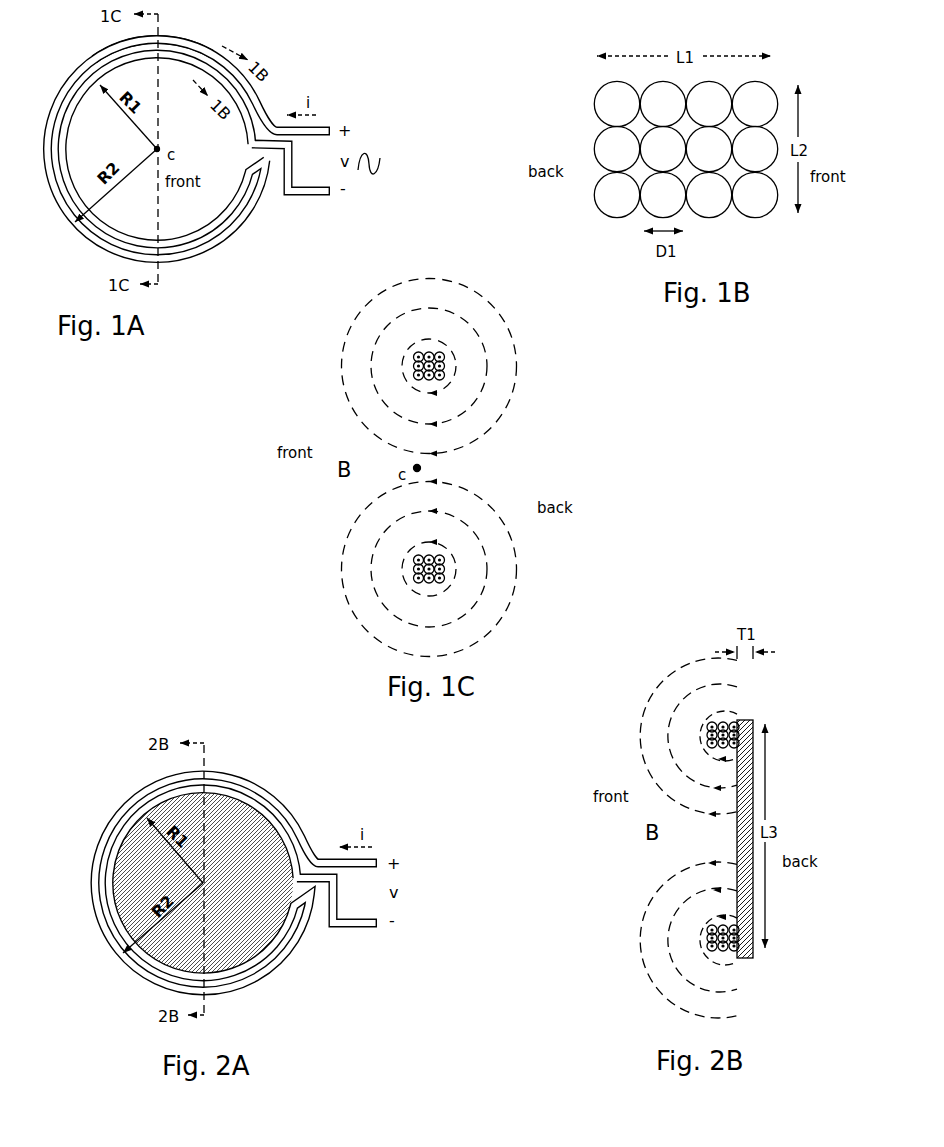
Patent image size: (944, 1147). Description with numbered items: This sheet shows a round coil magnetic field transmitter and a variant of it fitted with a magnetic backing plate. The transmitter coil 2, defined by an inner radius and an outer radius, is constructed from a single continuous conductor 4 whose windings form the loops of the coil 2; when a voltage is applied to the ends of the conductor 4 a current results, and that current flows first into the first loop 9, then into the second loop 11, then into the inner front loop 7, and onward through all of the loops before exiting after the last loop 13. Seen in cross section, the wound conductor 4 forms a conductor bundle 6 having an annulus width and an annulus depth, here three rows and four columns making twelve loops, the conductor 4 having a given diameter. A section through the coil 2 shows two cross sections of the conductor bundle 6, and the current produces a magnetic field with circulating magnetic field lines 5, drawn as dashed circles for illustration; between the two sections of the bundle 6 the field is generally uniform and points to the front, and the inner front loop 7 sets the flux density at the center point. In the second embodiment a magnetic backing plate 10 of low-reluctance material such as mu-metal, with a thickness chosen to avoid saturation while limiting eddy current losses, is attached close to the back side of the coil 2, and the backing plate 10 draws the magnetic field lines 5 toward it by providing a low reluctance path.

In FIG. 1A, the transmitter coil 2 is at (188, 148).
In FIG. 2A, the transmitter coil 2 is at (236, 870).
In FIG. 1A, the conductor 4 is at (290, 196).
In FIG. 1B, the conductor 4 is at (705, 216).
In FIG. 1C, the conductor 4 is at (492, 483).
In FIG. 2A, the conductor 4 is at (338, 928).
In FIG. 2B, the conductor 4 is at (712, 723).
In FIG. 1C, the magnetic field lines 5 is at (467, 443).
In FIG. 2B, the magnetic field lines 5 is at (642, 718).
In FIG. 1B, the conductor bundle 6 is at (676, 162).
In FIG. 1C, the conductor bundle 6 is at (492, 467).
In FIG. 1A, the inner front loop 7 is at (239, 184).
In FIG. 1B, the inner front loop 7 is at (752, 213).
In FIG. 1C, the inner front loop 7 is at (414, 376).
In FIG. 1A, the first loop 9 is at (258, 104).
In FIG. 1B, the first loop 9 is at (767, 83).
In FIG. 2A, the magnetic backing plate 10 is at (243, 813).
In FIG. 2B, the magnetic backing plate 10 is at (752, 958).
In FIG. 1A, the second loop 11 is at (182, 46).
In FIG. 1B, the last loop 13 is at (603, 213).